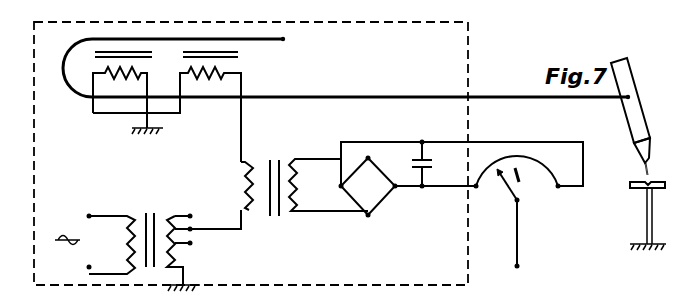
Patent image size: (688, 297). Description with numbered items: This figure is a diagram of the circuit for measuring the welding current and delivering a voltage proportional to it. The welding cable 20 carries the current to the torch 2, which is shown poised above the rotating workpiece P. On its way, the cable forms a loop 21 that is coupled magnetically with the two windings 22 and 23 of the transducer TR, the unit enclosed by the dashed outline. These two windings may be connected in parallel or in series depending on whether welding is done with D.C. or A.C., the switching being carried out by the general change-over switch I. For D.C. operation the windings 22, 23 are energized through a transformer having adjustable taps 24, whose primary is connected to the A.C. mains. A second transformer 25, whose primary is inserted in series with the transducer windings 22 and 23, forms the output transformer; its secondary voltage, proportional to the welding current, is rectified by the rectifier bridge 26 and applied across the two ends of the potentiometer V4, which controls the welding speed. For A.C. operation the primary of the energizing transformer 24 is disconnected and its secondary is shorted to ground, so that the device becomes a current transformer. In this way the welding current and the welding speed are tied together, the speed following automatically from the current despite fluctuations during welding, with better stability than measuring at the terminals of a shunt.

The torch 2 is at (624, 122).
The welding cable 20 is at (411, 96).
The loop 21 is at (171, 38).
The winding 22 is at (108, 75).
The winding 23 is at (208, 78).
The transformer having adjustable taps 24 is at (154, 212).
The second transformer 25 is at (280, 220).
The rectifier bridge 26 is at (375, 200).
The workpiece P is at (633, 188).
The transducer TR is at (460, 57).
The potentiometer V4 is at (508, 195).
The change-over switch I is at (299, 41).